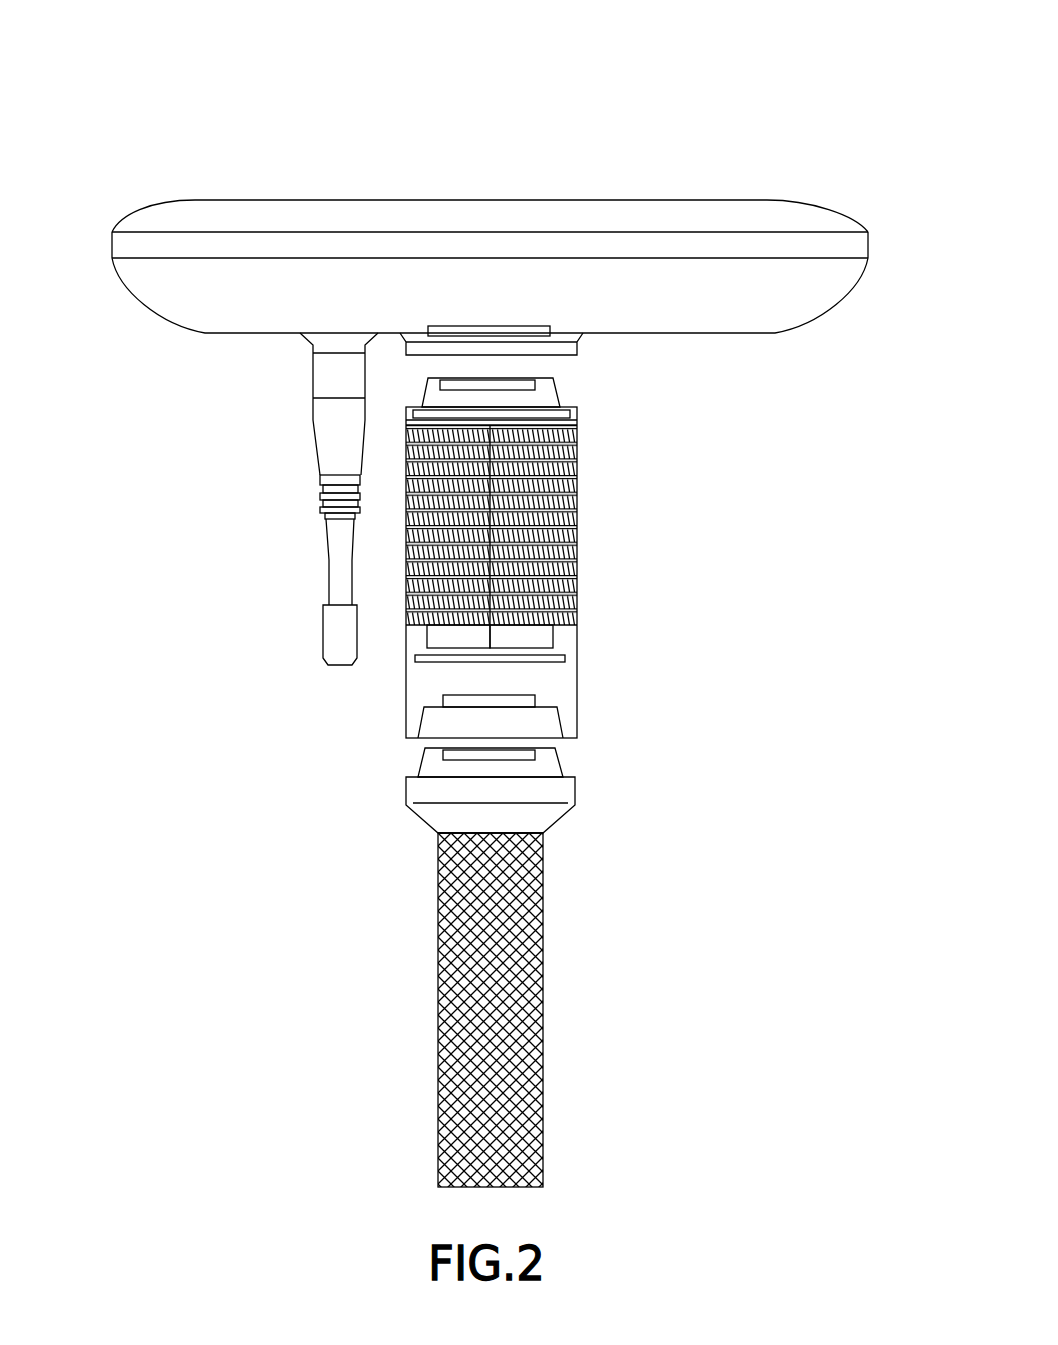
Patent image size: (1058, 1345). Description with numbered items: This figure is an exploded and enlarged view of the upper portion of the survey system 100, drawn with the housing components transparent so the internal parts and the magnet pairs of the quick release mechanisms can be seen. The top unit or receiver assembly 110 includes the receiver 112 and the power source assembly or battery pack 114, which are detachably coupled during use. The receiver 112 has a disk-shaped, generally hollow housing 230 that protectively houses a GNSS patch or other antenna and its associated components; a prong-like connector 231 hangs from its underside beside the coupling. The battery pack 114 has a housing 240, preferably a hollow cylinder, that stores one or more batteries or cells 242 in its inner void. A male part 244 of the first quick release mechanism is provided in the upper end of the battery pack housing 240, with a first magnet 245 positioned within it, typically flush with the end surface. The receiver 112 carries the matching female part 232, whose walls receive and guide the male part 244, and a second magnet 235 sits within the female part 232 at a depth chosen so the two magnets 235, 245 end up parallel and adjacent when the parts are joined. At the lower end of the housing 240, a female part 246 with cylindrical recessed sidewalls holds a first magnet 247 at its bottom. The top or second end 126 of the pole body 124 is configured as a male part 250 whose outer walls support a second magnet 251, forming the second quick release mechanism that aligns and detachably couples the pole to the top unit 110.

The survey system 100 is at (128, 90).
The receiver assembly 110 is at (876, 780).
The receiver 112 is at (94, 285).
The battery pack 114 is at (647, 564).
The pole body 124 is at (543, 1168).
The second end of the pole body 126 is at (438, 835).
The housing 230 is at (801, 331).
The connector prong 231 is at (238, 333).
The female part 232 is at (584, 353).
The second magnet 235 is at (500, 327).
The housing 240 is at (577, 690).
The battery cells 242 is at (537, 636).
The male part 244 is at (570, 388).
The first magnet 245 is at (452, 383).
The female part 246 is at (570, 748).
The first magnet 247 is at (445, 693).
The male part 250 is at (403, 768).
The second magnet 251 is at (525, 760).